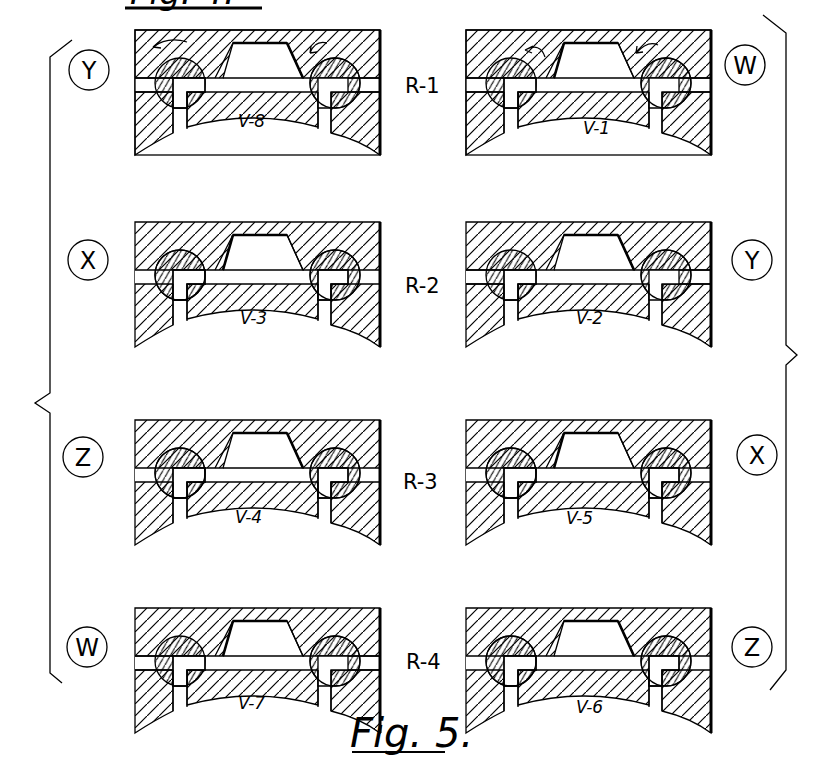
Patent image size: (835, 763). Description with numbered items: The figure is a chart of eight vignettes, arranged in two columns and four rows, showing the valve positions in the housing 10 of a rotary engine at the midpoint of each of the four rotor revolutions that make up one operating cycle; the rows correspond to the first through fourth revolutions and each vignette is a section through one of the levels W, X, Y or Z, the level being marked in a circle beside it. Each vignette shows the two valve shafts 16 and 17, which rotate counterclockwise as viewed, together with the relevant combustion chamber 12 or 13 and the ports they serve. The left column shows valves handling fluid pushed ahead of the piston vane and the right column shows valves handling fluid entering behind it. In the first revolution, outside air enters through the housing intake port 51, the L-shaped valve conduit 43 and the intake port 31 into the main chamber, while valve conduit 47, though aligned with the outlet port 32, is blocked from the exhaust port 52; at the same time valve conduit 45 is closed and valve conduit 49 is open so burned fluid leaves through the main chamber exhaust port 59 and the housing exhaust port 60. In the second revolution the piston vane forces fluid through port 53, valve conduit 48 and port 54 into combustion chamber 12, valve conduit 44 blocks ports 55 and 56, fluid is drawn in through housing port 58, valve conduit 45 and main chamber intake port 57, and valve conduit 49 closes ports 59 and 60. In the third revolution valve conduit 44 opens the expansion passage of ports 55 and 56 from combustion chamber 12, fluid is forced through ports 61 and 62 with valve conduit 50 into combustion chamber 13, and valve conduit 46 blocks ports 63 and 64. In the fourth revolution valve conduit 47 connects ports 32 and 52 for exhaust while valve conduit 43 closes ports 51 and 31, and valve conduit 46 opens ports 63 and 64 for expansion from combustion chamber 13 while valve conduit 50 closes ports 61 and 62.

The housing 10 is at (173, 48).
The combustion chamber 12 is at (270, 645).
The combustion chamber 13 is at (605, 645).
The valve shaft 16 is at (215, 65).
The valve shaft 17 is at (352, 70).
The intake port 31 is at (670, 113).
The outlet port 32 is at (516, 112).
The valve conduit 43 is at (673, 80).
The valve conduit 44 is at (345, 262).
The valve conduit 45 is at (338, 73).
The valve conduit 46 is at (335, 460).
The valve conduit 47 is at (516, 83).
The valve conduit 48 is at (185, 278).
The valve conduit 49 is at (177, 83).
The valve conduit 50 is at (178, 475).
The housing intake port 51 is at (712, 86).
The exhaust port 52 is at (470, 92).
The port 53 is at (175, 308).
The port 54 is at (205, 278).
The port 55 is at (306, 270).
The port 56 is at (338, 312).
The main chamber intake port 57 is at (330, 112).
The housing port 58 is at (380, 85).
The main chamber exhaust port 59 is at (178, 113).
The housing exhaust port 60 is at (148, 86).
The port 61 is at (188, 524).
The port 62 is at (247, 460).
The port 63 is at (308, 471).
The port 64 is at (328, 520).